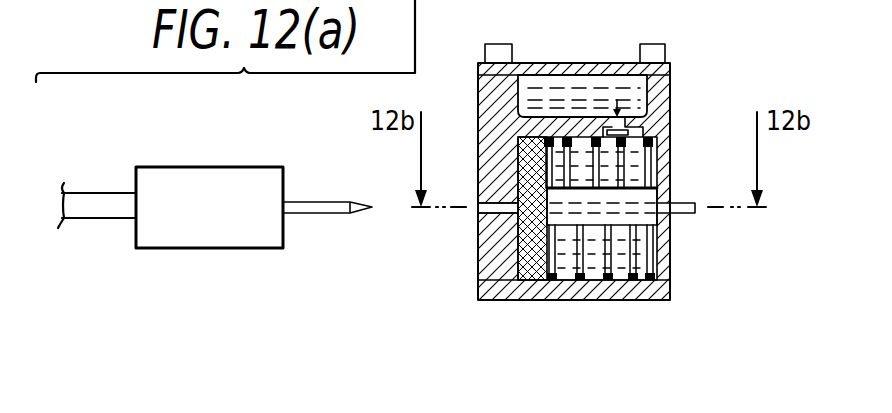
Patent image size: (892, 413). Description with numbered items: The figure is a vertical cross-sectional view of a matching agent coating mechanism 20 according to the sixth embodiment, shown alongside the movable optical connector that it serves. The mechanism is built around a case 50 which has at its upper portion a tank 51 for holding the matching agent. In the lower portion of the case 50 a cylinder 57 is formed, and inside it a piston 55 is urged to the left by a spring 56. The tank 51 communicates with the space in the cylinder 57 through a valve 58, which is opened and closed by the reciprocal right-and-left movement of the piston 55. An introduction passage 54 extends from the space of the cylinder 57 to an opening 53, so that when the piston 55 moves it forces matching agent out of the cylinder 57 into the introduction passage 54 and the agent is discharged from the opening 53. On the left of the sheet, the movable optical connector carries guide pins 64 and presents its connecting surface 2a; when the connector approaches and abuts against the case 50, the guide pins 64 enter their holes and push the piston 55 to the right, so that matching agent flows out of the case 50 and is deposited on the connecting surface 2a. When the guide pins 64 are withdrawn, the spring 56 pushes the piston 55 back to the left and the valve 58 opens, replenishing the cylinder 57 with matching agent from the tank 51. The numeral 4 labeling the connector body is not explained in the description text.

The recording pen body 4 is at (178, 236).
The connecting surface 2a is at (288, 236).
The guide pins 64 is at (333, 208).
The matching agent coating mechanism 20 is at (678, 51).
The tank 51 is at (633, 87).
The valve 58 is at (632, 128).
The case 50 is at (660, 164).
The introduction passage 54 is at (688, 205).
The cylinder 57 is at (650, 270).
The opening 53 is at (478, 208).
The piston 55 is at (535, 266).
The spring 56 is at (598, 283).